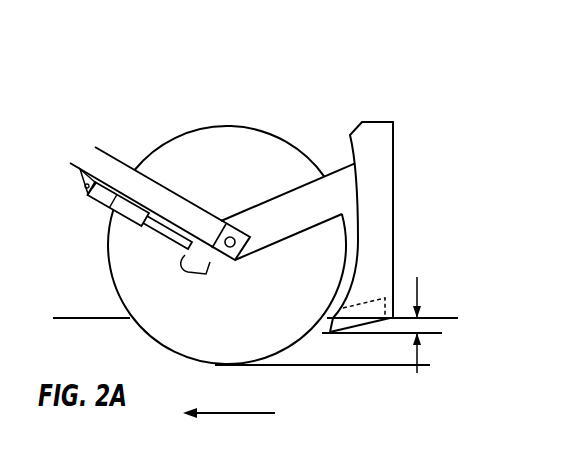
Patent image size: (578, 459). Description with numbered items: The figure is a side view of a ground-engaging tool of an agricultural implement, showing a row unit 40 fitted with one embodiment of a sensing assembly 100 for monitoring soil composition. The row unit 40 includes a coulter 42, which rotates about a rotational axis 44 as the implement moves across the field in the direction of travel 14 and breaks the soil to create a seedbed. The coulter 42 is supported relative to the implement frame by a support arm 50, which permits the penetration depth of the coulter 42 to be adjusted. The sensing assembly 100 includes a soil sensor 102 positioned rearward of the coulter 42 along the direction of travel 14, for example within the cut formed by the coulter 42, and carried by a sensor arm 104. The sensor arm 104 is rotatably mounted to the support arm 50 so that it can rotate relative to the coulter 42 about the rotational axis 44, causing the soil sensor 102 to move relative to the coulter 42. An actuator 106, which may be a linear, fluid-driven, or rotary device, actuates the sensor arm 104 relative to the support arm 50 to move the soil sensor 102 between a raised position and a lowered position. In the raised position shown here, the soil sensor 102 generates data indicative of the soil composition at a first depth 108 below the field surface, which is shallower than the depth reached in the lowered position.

The row unit 40 is at (101, 74).
The coulter 42 is at (258, 140).
The rotational axis 44 is at (233, 237).
The support arm 50 is at (112, 170).
The sensing assembly 100 is at (343, 113).
The soil sensor 102 is at (360, 318).
The sensor arm 104 is at (385, 172).
The actuator 106 is at (102, 201).
The first depth 108 is at (418, 290).
The direction of travel 14 is at (223, 413).